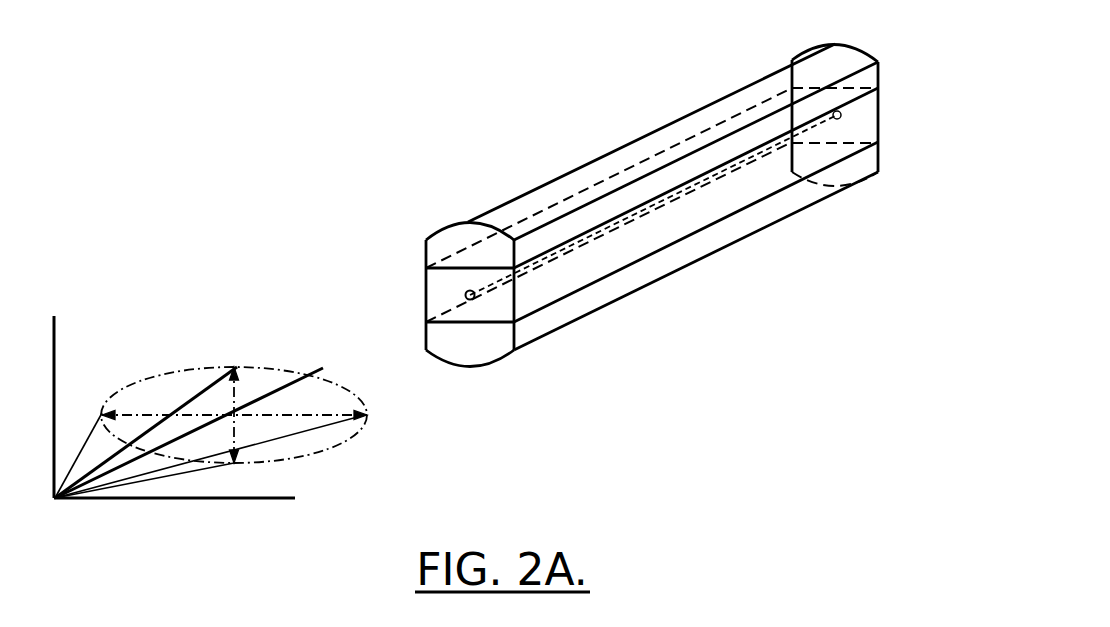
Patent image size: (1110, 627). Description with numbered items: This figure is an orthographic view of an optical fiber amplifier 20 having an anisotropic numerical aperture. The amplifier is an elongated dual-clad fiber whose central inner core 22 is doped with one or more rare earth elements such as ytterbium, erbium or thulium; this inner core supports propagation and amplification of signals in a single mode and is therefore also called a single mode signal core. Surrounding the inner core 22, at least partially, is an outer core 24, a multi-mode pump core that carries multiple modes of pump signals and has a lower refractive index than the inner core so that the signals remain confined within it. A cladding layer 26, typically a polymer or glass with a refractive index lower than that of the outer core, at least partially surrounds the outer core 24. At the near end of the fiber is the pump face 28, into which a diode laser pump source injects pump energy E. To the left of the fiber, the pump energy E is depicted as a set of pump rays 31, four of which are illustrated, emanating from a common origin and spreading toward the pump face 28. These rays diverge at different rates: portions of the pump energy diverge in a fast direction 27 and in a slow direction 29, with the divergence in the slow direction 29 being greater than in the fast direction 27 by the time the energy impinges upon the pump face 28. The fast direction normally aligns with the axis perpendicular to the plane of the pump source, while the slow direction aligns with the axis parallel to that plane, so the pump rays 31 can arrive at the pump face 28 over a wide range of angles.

The optical fiber amplifier 20 is at (610, 219).
The inner core 22 is at (473, 299).
The outer core 24 is at (468, 290).
The cladding layer 26 is at (498, 333).
The pump face 28 is at (421, 271).
The fast direction 27 is at (276, 356).
The slow direction 29 is at (138, 410).
The pump rays 31 is at (85, 440).
The pump energy E is at (231, 303).